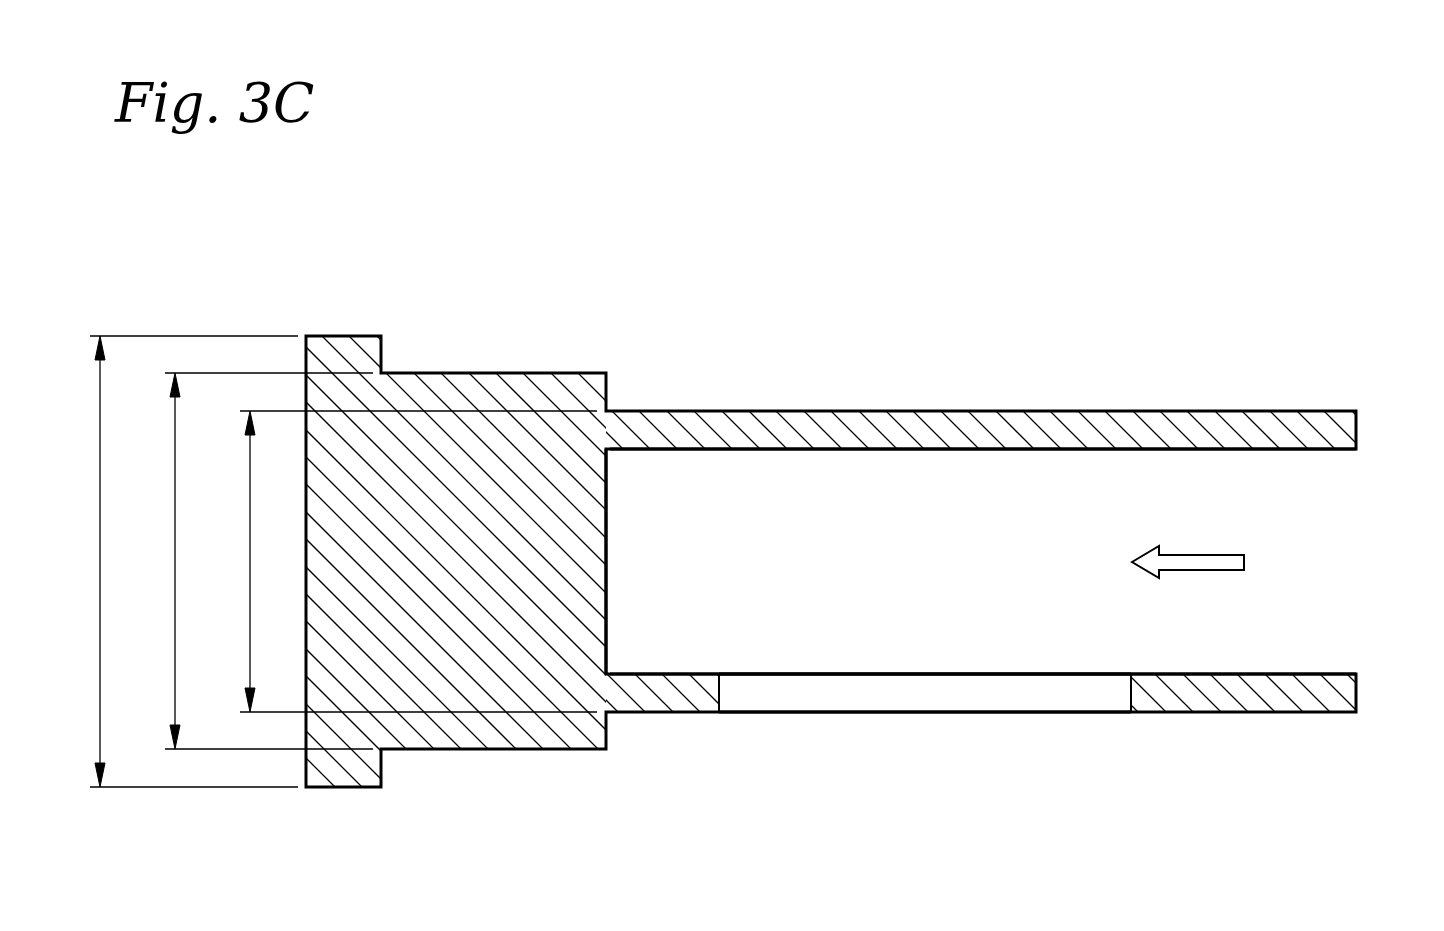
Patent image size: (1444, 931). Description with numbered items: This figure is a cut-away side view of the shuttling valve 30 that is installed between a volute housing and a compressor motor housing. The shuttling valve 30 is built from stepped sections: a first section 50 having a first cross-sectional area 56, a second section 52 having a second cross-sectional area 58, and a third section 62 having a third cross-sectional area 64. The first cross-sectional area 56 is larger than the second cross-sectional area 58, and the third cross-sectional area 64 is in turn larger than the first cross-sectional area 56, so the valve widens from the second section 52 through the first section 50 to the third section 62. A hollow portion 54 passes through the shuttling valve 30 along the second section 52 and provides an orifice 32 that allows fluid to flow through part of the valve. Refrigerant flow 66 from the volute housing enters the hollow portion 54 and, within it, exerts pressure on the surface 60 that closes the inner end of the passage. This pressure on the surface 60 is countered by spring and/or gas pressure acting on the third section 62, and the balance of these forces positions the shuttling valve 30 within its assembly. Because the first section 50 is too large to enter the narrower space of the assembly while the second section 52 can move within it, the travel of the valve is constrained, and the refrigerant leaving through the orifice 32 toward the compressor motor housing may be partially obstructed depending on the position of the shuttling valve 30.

The shuttling valve 30 is at (1202, 270).
The orifice 32 is at (970, 695).
The first section 50 is at (381, 328).
The second section 52 is at (607, 364).
The hollow portion 54 is at (1363, 449).
The first cross-sectional area 56 is at (175, 632).
The second cross-sectional area 58 is at (250, 560).
The surface 60 is at (612, 540).
The third section 62 is at (381, 328).
The third cross-sectional area 64 is at (100, 525).
The refrigerant flow 66 is at (1226, 553).